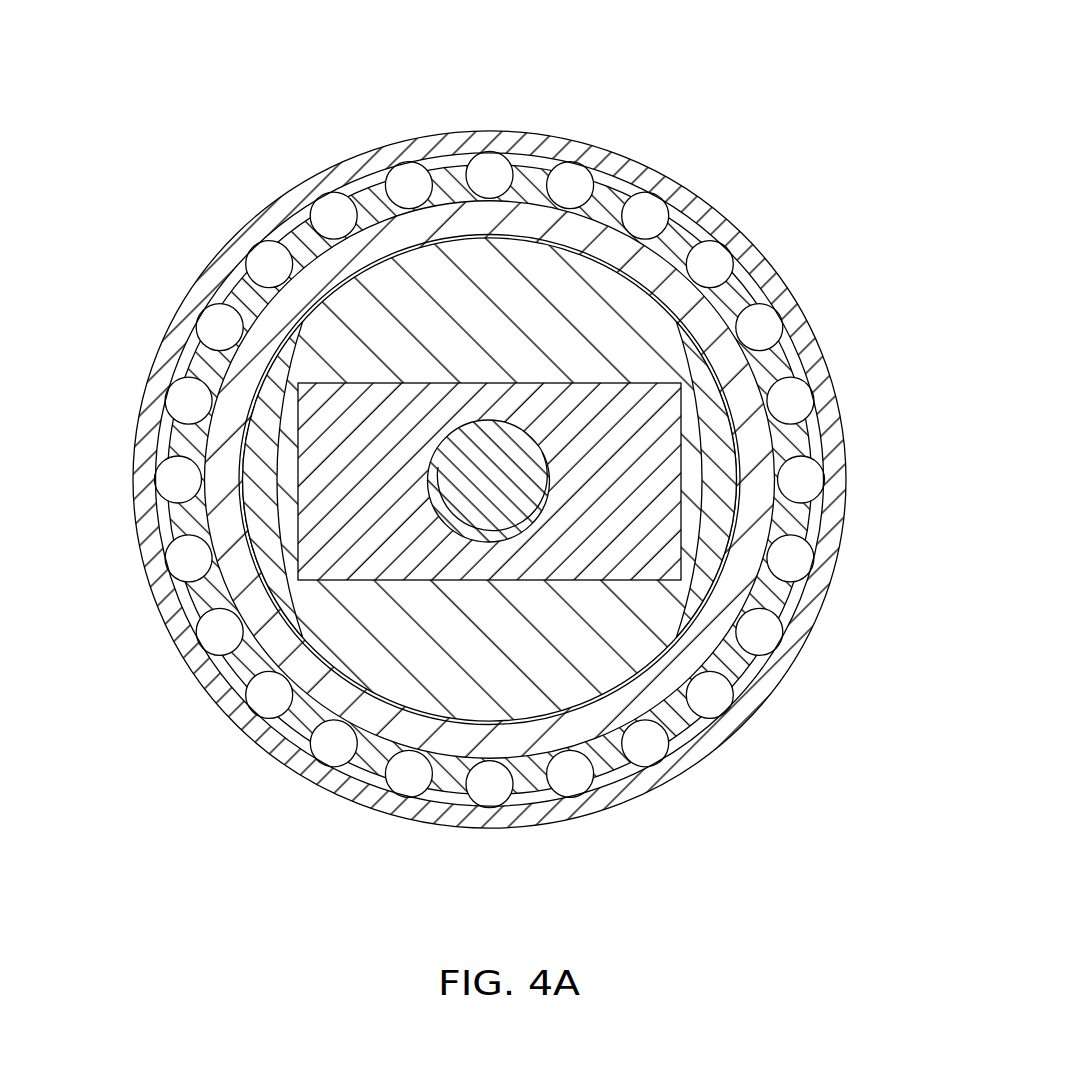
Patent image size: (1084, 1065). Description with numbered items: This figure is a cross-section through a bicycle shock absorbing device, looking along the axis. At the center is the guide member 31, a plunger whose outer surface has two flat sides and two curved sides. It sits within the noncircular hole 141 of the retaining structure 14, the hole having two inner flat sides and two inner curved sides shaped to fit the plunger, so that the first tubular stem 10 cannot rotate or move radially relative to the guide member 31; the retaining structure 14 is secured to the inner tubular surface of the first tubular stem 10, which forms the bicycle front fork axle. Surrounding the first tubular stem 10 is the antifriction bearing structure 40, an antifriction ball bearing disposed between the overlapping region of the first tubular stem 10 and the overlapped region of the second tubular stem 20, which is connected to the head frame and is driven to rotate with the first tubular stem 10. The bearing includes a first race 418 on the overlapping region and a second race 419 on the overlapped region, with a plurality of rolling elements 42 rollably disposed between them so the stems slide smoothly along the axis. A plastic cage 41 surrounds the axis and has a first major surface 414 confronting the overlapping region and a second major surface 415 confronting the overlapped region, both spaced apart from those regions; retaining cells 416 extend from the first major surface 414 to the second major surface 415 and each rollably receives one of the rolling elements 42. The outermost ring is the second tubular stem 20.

The first tubular stem 10 is at (318, 685).
The retaining structure 14 is at (399, 373).
The noncircular hole 141 is at (470, 385).
The second tubular stem 20 is at (529, 480).
The guide member 31 is at (293, 455).
The antifriction bearing structure 40 is at (540, 405).
The cage 41 is at (676, 238).
The rolling elements 42 is at (642, 205).
The first major surface 414 is at (517, 190).
The second major surface 415 is at (540, 168).
The retaining cells 416 is at (760, 298).
The first race 418 is at (758, 420).
The second race 419 is at (812, 375).